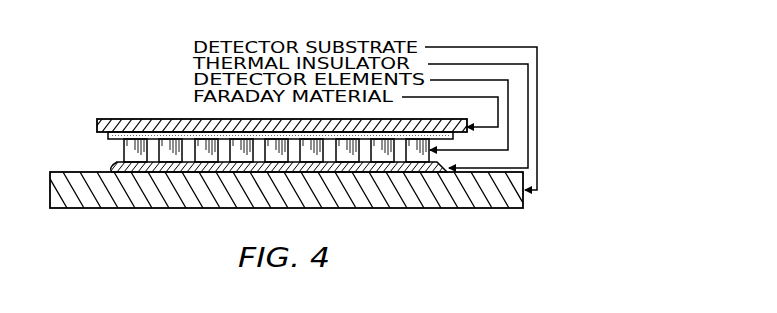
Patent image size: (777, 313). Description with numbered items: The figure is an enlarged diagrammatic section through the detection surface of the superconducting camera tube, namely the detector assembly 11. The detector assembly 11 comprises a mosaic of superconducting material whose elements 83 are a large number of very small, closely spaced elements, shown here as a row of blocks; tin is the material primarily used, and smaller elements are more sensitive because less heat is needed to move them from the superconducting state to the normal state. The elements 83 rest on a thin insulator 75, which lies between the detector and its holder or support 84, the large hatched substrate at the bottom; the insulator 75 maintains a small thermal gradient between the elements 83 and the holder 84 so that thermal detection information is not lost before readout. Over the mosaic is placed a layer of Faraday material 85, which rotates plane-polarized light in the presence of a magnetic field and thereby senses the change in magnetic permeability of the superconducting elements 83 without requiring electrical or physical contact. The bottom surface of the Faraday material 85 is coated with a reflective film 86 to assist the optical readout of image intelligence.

The detector assembly 11 is at (143, 116).
The Faraday material 85 is at (96, 124).
The reflective film 86 is at (108, 137).
The superconducting elements 83 is at (124, 151).
The thin insulator 75 is at (113, 167).
The holder 84 is at (50, 188).